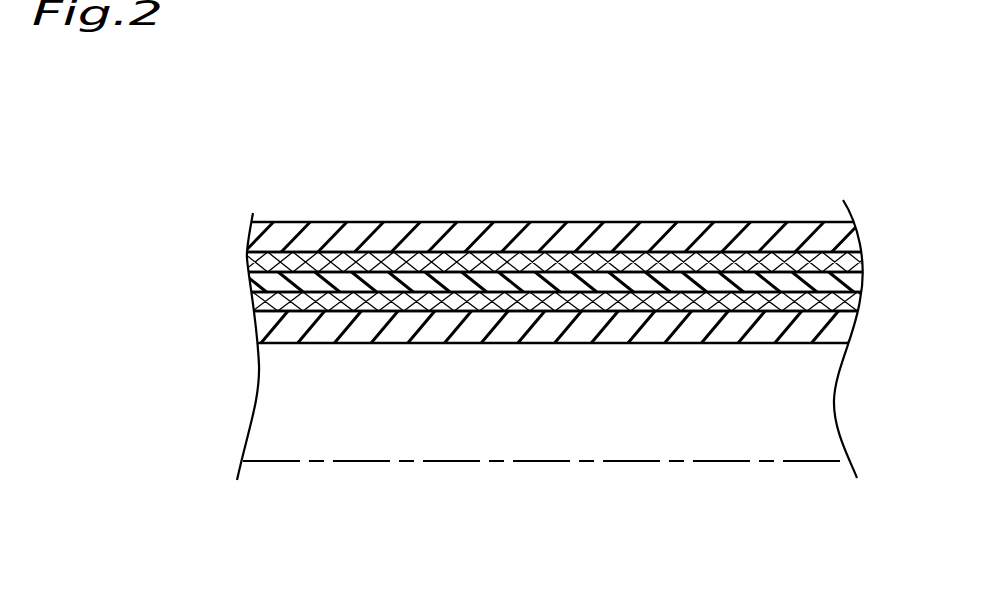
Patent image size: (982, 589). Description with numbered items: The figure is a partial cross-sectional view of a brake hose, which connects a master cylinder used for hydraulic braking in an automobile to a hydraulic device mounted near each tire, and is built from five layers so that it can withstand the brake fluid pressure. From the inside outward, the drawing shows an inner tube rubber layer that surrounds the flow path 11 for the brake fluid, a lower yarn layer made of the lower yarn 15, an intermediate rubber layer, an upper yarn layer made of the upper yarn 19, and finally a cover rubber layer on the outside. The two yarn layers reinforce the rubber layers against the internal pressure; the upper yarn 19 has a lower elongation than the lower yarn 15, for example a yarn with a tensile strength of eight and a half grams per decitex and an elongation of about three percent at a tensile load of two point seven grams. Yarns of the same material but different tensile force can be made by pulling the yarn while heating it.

The flow path 11 is at (265, 402).
The lower yarn 15 is at (550, 301).
The upper yarn 19 is at (550, 262).